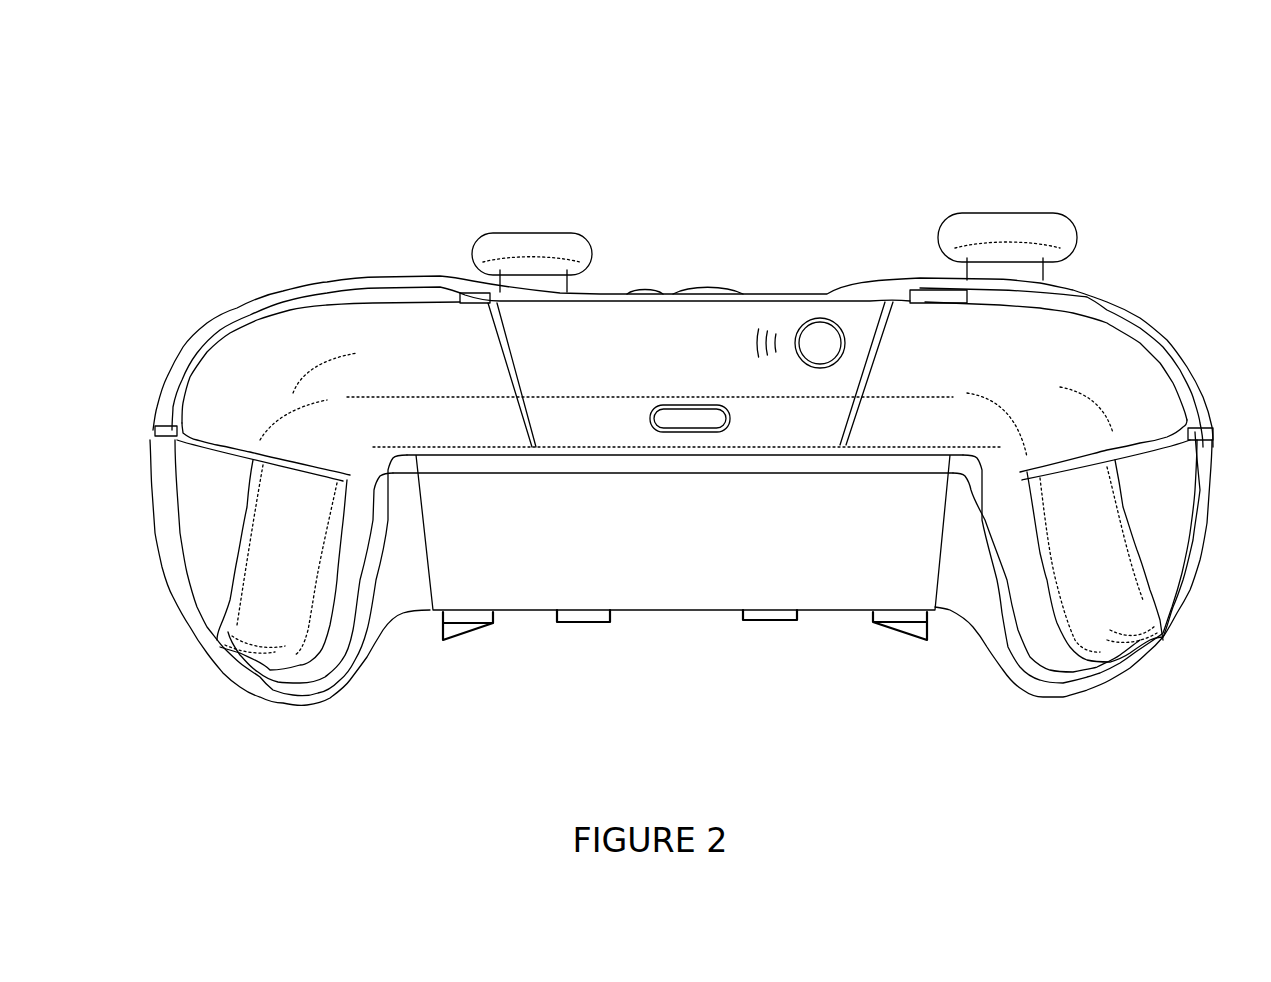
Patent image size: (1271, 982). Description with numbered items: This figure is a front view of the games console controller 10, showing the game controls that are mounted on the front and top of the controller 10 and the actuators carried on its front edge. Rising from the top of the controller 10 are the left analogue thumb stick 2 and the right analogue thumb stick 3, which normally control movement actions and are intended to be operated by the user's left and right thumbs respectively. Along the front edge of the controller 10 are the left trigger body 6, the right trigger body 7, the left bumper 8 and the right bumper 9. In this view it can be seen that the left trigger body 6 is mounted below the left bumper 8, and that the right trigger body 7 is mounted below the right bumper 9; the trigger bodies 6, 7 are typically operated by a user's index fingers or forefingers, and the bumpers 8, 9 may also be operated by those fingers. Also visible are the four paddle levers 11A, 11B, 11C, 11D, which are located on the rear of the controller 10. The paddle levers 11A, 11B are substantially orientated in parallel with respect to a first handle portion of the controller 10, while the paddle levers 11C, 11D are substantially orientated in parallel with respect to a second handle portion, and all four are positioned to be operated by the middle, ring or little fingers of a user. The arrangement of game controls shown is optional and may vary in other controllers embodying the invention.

The controller 10 is at (735, 192).
The left analogue thumb stick 2 is at (1008, 226).
The right analogue thumb stick 3 is at (524, 245).
The left trigger body 6 is at (1120, 610).
The right trigger body 7 is at (257, 630).
The left bumper 8 is at (1123, 358).
The right bumper 9 is at (268, 357).
The paddle lever 11A is at (483, 627).
The paddle lever 11B is at (583, 622).
The paddle lever 11C is at (780, 620).
The paddle lever 11D is at (900, 627).